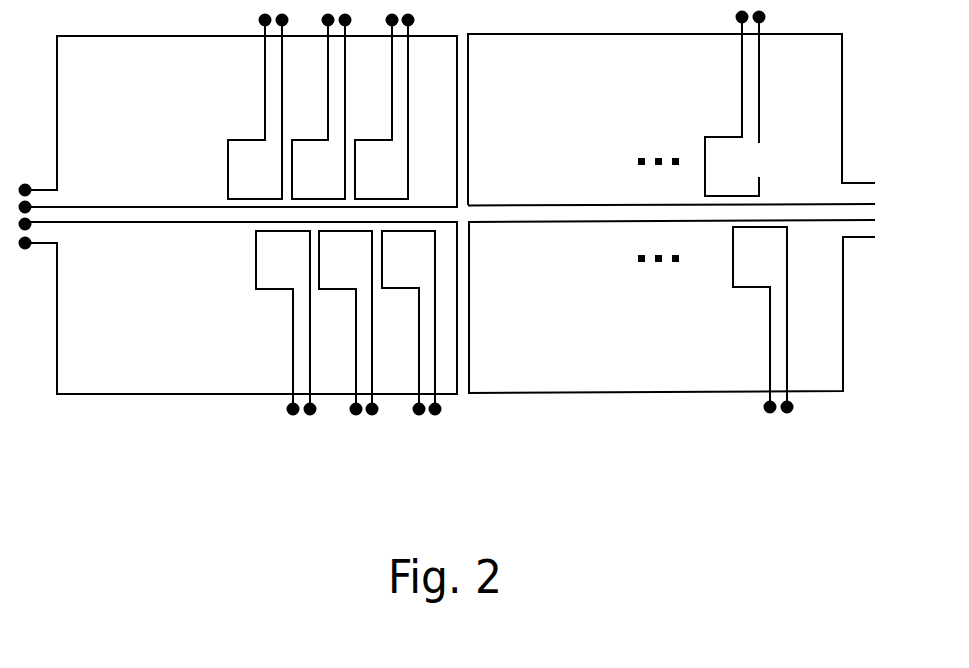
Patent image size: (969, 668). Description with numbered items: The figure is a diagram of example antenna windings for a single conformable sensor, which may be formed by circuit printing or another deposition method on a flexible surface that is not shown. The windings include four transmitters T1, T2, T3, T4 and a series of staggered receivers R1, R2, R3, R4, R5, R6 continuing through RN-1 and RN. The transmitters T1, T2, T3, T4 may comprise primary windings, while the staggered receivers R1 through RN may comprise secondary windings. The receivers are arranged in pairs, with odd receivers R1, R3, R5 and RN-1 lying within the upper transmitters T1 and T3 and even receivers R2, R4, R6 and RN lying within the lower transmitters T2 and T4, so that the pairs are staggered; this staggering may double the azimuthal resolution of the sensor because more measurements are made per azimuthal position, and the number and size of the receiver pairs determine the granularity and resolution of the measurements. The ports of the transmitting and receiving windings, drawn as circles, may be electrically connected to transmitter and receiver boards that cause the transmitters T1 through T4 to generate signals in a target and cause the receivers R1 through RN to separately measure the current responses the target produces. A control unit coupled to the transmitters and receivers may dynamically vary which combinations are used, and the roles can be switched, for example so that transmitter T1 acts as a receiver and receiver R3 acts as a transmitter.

The transmitter T1 is at (239, 124).
The transmitter T2 is at (239, 307).
The transmitter T3 is at (671, 120).
The transmitter T4 is at (672, 306).
The staggered receiver R1 is at (258, 107).
The staggered receiver R2 is at (286, 323).
The staggered receiver R3 is at (321, 107).
The staggered receiver R4 is at (348, 323).
The staggered receiver R5 is at (384, 107).
The staggered receiver R6 is at (411, 323).
The staggered receiver RN-1 is at (735, 104).
The staggered receiver RN is at (763, 320).